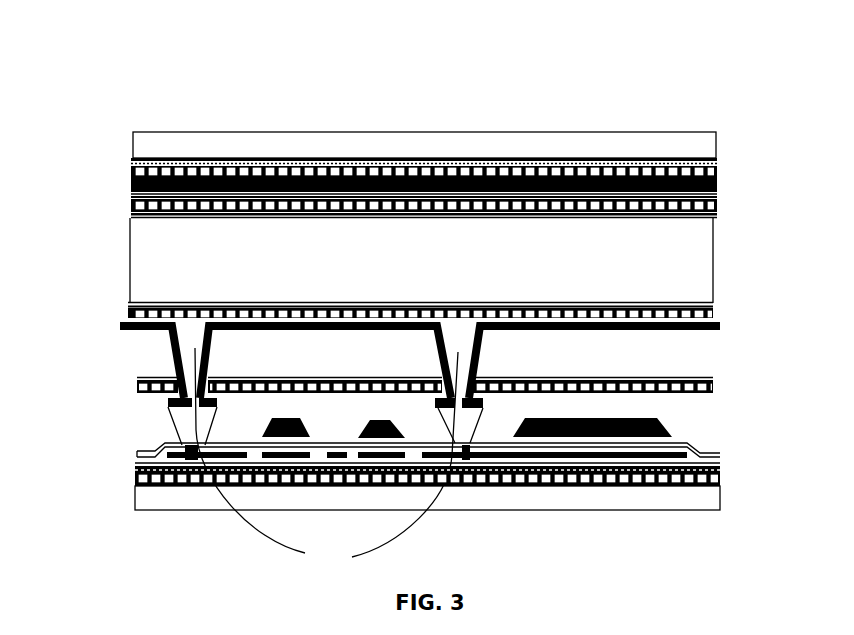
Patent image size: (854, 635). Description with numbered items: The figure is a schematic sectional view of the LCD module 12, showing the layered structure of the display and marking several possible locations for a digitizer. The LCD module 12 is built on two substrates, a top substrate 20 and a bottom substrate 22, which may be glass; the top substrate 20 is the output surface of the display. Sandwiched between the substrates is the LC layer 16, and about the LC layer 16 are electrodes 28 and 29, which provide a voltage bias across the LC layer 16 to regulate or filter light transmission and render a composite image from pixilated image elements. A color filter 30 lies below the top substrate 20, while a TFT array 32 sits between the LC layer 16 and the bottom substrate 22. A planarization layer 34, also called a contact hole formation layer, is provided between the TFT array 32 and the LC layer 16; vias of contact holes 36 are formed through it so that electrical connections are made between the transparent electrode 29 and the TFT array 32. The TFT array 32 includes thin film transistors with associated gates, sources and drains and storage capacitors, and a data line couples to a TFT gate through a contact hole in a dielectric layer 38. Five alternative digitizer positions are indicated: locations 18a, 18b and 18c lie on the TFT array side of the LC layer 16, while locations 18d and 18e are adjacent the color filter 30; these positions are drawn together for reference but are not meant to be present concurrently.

The LCD module 12 is at (710, 93).
The LC layer 16 is at (128, 262).
The digitizer location 18a is at (723, 387).
The digitizer location 18b is at (724, 305).
The digitizer location 18c is at (723, 475).
The digitizer location 18d is at (719, 205).
The digitizer location 18e is at (719, 170).
The top substrate 20 is at (128, 142).
The bottom substrate 22 is at (128, 497).
The electrode 28 is at (127, 215).
The electrode 29 is at (128, 325).
The color filter 30 is at (124, 188).
The TFT array 32 is at (122, 395).
The planarization layer 34 is at (131, 368).
The vias of contact holes 36 is at (326, 461).
The dielectric layer 38 is at (712, 408).